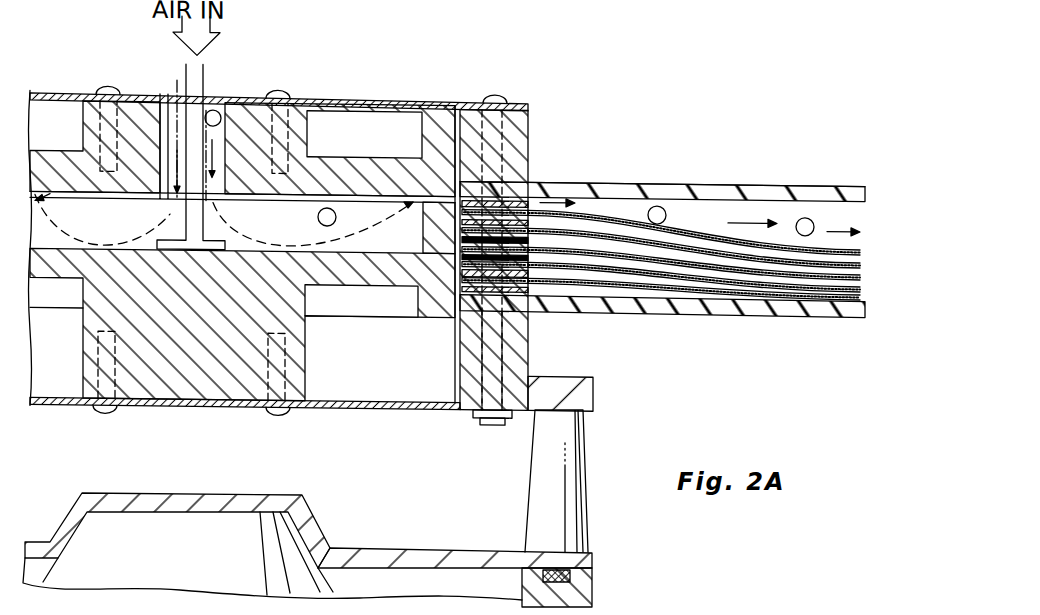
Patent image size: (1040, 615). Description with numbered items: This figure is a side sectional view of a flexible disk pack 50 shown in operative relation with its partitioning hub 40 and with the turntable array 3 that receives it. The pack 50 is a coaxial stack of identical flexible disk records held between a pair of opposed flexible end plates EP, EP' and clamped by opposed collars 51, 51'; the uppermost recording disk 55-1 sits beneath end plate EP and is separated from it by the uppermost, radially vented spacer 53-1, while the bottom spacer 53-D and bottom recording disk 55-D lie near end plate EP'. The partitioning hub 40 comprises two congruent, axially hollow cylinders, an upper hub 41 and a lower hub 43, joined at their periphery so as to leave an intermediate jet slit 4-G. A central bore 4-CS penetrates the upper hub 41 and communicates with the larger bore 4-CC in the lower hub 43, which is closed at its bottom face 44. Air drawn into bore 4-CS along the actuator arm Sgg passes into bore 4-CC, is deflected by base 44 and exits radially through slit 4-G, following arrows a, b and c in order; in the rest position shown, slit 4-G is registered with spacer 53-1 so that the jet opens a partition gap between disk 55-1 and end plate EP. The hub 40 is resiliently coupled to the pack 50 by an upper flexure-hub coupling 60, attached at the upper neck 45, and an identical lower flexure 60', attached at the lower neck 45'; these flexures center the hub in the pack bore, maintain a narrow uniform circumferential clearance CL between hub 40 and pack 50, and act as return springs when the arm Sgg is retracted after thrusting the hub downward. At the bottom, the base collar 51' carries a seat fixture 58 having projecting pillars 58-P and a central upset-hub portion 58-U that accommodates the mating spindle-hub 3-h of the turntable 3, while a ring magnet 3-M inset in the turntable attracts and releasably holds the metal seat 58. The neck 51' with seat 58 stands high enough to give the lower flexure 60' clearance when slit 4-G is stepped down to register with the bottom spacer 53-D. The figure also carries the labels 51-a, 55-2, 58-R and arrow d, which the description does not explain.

The turntable array 3 is at (600, 591).
The spindle-hub 3-h is at (210, 560).
The ring magnet 3-M is at (522, 578).
The central bore 4-CS is at (177, 98).
The companion bore 4-CC is at (224, 220).
The air jet slit 4-G is at (440, 187).
The actuator arm Sgg is at (205, 74).
The partition hub 40 is at (213, 321).
The upper hub cylinder 41 is at (422, 133).
The lower hub cylinder 43 is at (422, 237).
The bottom face 44 is at (373, 282).
The upper neck 45 is at (307, 113).
The lower neck 45' is at (312, 367).
The flexible disk pack 50 is at (793, 103).
The upper collar 51 is at (530, 249).
The base collar 51' is at (444, 360).
The column flange 51-a is at (592, 386).
The uppermost spacer 53-1 is at (527, 200).
The bottom spacer 53-D is at (530, 284).
The uppermost recording disk 55-1 is at (613, 209).
The second electrode strip 55-2 is at (667, 239).
The bottom recording disk 55-D is at (661, 317).
The circumferential clearance CL is at (458, 91).
The upper flexible end plate EP is at (662, 173).
The lower flexible end plate EP' is at (662, 326).
The seat fixture 58 is at (380, 546).
The upset-hub portion 58-U is at (263, 495).
The projecting pillars 58-P is at (530, 488).
The rear block 58-R is at (592, 560).
The flexure-hub coupling 60 is at (279, 69).
The lower flexure 60' is at (245, 422).
The air-flow arrow a is at (213, 116).
The air-flow arrow b is at (327, 215).
The air-flow arrow c is at (657, 213).
The flow stage d is at (805, 225).